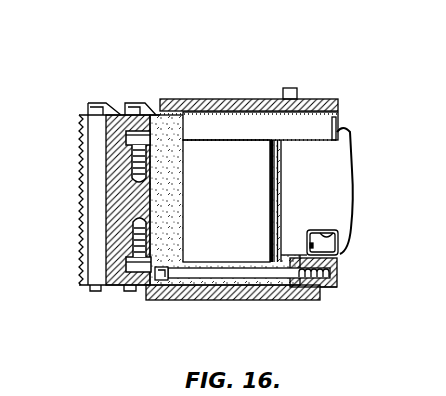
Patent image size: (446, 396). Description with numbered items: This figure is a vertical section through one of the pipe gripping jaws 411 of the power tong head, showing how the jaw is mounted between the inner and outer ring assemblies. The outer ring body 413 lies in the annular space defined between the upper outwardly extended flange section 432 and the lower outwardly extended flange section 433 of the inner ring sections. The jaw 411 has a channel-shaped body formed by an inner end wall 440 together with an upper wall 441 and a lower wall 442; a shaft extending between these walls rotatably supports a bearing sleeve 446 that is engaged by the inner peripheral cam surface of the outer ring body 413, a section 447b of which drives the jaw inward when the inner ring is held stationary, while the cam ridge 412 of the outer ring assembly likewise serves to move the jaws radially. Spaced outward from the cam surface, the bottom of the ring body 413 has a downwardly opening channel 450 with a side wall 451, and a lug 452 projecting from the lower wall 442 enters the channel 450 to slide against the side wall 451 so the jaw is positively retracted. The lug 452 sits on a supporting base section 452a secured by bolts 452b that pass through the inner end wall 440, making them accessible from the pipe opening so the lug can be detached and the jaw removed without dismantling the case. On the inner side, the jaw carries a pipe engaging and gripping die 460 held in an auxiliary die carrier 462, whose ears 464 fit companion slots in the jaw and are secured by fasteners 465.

The pipe gripping jaw 411 is at (184, 100).
The cam ridge 412 is at (289, 250).
The ring-like body 413 is at (345, 157).
The outwardly extended flange section 432 is at (228, 102).
The outwardly extended flange section 433 is at (311, 297).
The inner end wall 440 is at (175, 160).
The upper wall 441 is at (311, 127).
The lower wall 442 is at (213, 285).
The bearing sleeve 446 is at (237, 201).
The section of cam surface 447b is at (276, 182).
The downwardly opening channel 450 is at (338, 231).
The side wall 451 is at (310, 244).
The lug 452 is at (323, 252).
The supporting base section 452a is at (330, 280).
The bolt 452b is at (267, 273).
The pipe engaging and gripping die 460 is at (78, 262).
The auxiliary die carrier 462 is at (107, 143).
The ear 464 is at (153, 190).
The fastener 465 is at (137, 143).